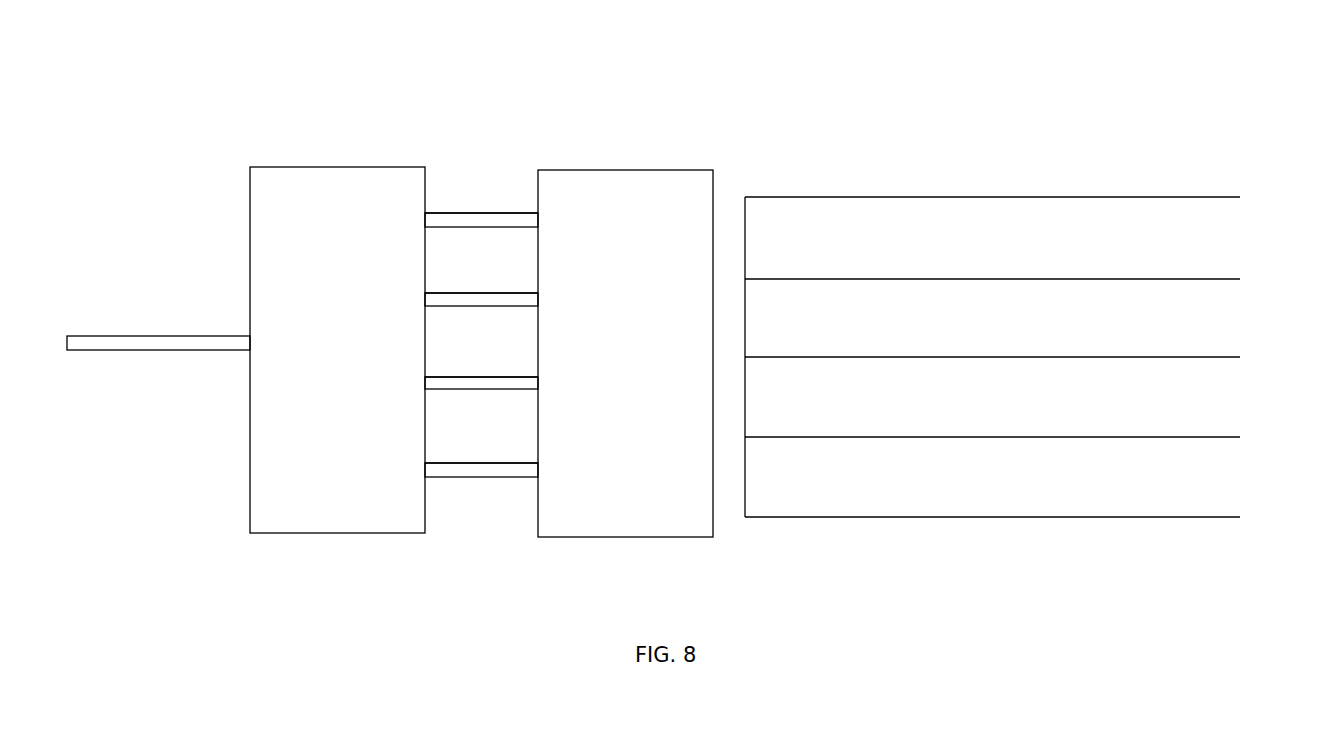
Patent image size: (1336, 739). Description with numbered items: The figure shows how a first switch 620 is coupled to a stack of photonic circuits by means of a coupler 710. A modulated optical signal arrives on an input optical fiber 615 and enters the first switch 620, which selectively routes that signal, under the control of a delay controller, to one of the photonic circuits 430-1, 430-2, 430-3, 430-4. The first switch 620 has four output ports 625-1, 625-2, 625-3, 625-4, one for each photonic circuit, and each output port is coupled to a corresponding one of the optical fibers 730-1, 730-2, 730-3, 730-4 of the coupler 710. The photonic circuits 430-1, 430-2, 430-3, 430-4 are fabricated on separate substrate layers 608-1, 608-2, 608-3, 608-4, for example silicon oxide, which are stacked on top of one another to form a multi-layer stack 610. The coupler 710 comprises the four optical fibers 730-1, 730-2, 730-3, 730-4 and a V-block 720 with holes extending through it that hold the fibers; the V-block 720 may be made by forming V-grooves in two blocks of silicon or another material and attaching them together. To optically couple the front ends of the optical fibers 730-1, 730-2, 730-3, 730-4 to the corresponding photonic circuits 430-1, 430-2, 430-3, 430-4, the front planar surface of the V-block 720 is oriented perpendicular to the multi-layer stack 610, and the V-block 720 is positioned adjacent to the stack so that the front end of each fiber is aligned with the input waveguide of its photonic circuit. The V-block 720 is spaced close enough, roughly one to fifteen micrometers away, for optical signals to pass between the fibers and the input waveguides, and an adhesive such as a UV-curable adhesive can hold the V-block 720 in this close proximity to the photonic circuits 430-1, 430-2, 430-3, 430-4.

The input optical fiber 615 is at (193, 332).
The first switch 620 is at (383, 167).
The V-block 720 is at (655, 170).
The coupler 710 is at (545, 122).
The output port 625-1 is at (427, 210).
The output port 625-2 is at (427, 292).
The output port 625-3 is at (428, 377).
The output port 625-4 is at (428, 463).
The optical fiber 730-1 is at (522, 210).
The optical fiber 730-2 is at (525, 292).
The optical fiber 730-3 is at (527, 373).
The optical fiber 730-4 is at (527, 460).
The multi-layer stack 610 is at (1071, 155).
The photonic circuit 430-1 is at (1237, 205).
The photonic circuit 430-2 is at (1245, 279).
The photonic circuit 430-3 is at (1237, 363).
The photonic circuit 430-4 is at (1237, 445).
The substrate layer 608-1 is at (1233, 243).
The substrate layer 608-2 is at (1233, 318).
The substrate layer 608-3 is at (1233, 402).
The substrate layer 608-4 is at (1237, 487).